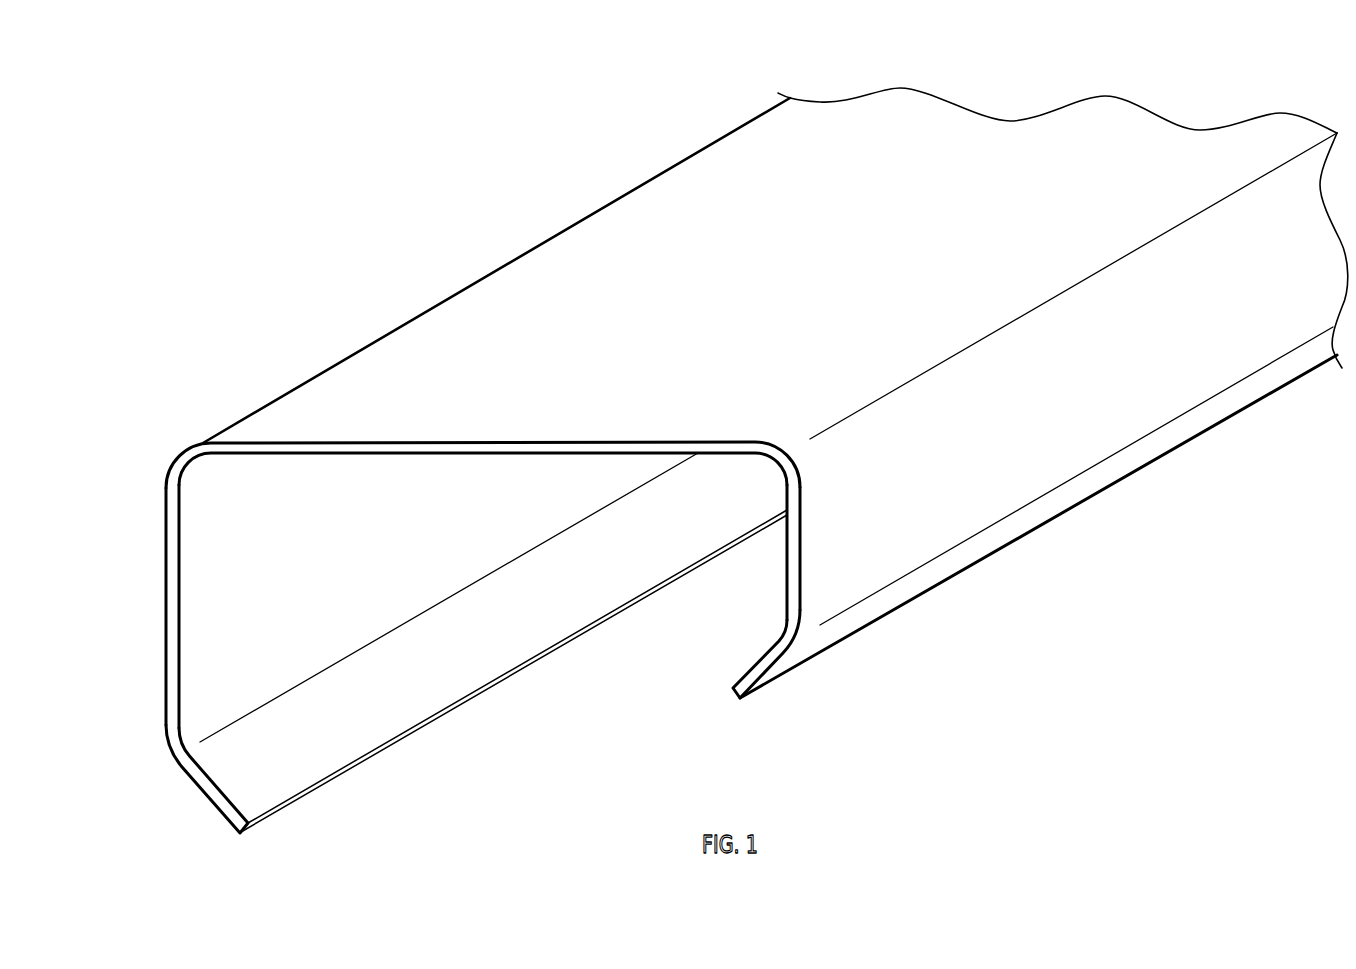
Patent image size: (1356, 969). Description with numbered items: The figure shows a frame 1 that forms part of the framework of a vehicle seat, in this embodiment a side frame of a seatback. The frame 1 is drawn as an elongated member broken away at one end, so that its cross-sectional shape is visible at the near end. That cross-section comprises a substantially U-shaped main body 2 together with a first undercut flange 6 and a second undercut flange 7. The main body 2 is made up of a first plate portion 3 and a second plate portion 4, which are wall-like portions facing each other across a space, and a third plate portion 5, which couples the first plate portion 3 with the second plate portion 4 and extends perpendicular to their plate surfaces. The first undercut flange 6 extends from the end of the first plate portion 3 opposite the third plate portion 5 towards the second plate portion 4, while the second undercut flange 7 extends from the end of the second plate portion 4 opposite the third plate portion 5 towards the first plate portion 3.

The frame 1 is at (536, 140).
The main body 2 is at (469, 263).
The first plate portion 3 is at (172, 617).
The second plate portion 4 is at (797, 557).
The third plate portion 5 is at (395, 360).
The first undercut flange 6 is at (200, 798).
The second undercut flange 7 is at (810, 652).